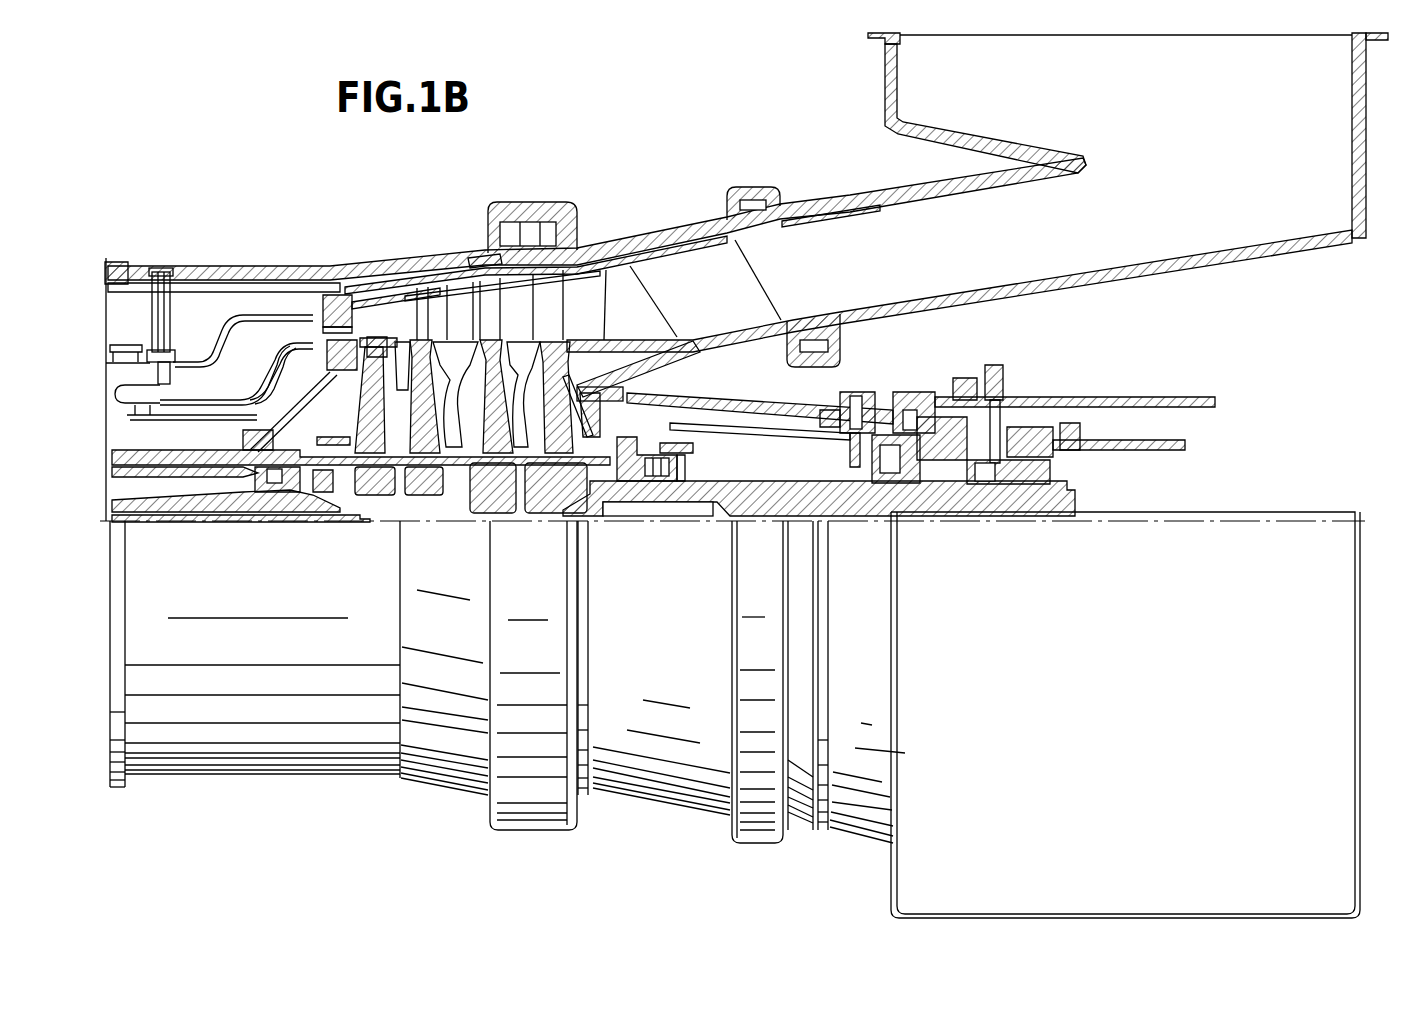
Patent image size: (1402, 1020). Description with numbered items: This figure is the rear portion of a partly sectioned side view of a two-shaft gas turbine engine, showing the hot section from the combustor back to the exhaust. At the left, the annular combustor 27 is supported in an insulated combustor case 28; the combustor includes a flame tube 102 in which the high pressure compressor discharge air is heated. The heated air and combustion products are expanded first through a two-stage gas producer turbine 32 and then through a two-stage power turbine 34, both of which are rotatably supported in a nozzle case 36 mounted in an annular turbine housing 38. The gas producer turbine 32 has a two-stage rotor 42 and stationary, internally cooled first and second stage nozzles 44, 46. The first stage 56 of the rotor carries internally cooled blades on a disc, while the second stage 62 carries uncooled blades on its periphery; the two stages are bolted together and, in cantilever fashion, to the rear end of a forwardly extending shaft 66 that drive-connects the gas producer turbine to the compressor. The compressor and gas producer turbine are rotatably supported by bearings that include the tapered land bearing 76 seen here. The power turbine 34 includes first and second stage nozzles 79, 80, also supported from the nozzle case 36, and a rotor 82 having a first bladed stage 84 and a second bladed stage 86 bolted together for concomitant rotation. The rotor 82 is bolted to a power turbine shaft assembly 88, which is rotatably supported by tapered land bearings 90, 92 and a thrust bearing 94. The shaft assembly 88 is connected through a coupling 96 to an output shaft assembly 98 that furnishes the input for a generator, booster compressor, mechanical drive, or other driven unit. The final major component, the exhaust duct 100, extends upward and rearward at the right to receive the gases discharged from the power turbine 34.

The annular combustor 27 is at (213, 314).
The combustor case 28 is at (282, 273).
The gas producer turbine 32 is at (337, 359).
The power turbine 34 is at (572, 350).
The nozzle case 36 is at (463, 298).
The turbine housing 38 is at (452, 264).
The two-stage rotor 42 is at (400, 503).
The first stage nozzle 44 is at (322, 330).
The second stage nozzle 46 is at (396, 322).
The first stage 56 is at (363, 427).
The second stage 62 is at (419, 426).
The shaft 66 is at (165, 452).
The tapered land bearing 76 is at (283, 497).
The first stage nozzle 79 is at (480, 262).
The second stage nozzle 80 is at (494, 208).
The rotor 82 is at (510, 513).
The first bladed stage 84 is at (480, 404).
The second bladed stage 86 is at (566, 378).
The power turbine shaft assembly 88 is at (800, 483).
The tapered land bearing 90 is at (664, 483).
The tapered land bearing 92 is at (958, 487).
The thrust bearing 94 is at (883, 487).
The coupling 96 is at (948, 395).
The output shaft assembly 98 is at (1172, 396).
The exhaust duct 100 is at (885, 82).
The flame tube 102 is at (147, 332).